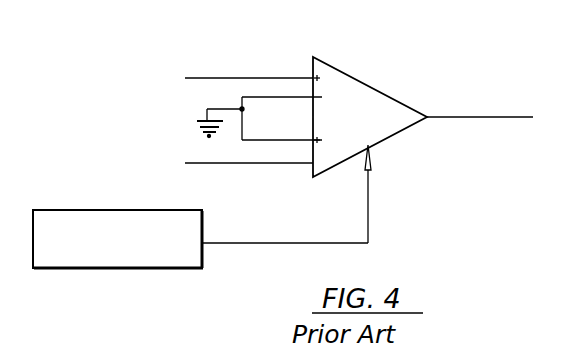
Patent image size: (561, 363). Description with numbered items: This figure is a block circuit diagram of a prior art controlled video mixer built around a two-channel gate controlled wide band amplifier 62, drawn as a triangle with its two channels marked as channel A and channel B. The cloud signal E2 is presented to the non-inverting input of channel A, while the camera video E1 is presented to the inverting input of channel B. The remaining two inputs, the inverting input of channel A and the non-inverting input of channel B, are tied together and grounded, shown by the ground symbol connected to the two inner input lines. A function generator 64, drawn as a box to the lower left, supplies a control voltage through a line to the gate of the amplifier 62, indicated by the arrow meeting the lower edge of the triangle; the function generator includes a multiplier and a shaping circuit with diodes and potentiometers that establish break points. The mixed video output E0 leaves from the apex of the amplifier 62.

The gate controlled wide band amplifier 62 is at (312, 105).
The function generator 64 is at (98, 210).
The cloud signal E2 is at (248, 66).
The camera video E1 is at (248, 156).
The video output E0 is at (480, 103).
The channel A is at (327, 86).
The channel B is at (327, 148).